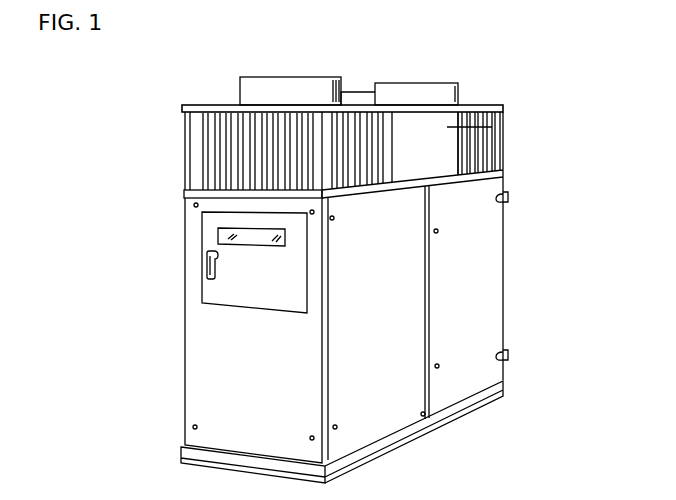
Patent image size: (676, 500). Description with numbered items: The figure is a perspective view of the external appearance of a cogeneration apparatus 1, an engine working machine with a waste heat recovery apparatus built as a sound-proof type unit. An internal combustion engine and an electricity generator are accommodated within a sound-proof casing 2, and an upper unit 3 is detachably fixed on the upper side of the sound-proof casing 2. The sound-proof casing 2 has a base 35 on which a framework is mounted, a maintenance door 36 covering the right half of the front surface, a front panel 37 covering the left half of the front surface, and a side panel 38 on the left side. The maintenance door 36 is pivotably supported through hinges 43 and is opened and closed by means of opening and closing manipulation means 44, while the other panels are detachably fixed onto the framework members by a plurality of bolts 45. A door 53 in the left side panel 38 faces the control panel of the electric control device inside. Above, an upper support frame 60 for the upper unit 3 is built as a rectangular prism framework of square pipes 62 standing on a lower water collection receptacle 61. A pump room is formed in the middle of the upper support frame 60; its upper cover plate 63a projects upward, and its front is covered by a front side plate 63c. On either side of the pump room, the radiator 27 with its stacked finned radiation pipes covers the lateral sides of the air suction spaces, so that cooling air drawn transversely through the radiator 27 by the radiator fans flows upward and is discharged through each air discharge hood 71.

The cogeneration apparatus 1 is at (80, 232).
The sound-proof casing 2 is at (138, 462).
The upper unit 3 is at (138, 78).
The radiator 27 is at (213, 155).
The base 35 is at (420, 432).
The maintenance door 36 is at (468, 383).
The front panel 37 is at (385, 428).
The side panel 38 is at (195, 388).
The hinge 43 is at (508, 197).
The opening and closing manipulation means 44 is at (437, 366).
The bolt 45 is at (193, 427).
The door 53 is at (207, 296).
The upper support frame 60 is at (182, 131).
The lower water collection receptacle 61 is at (184, 193).
The square pipe 62 is at (203, 104).
The upper cover plate 63a is at (353, 91).
The front side plate 63c is at (503, 117).
The air discharge hood 71 is at (248, 90).